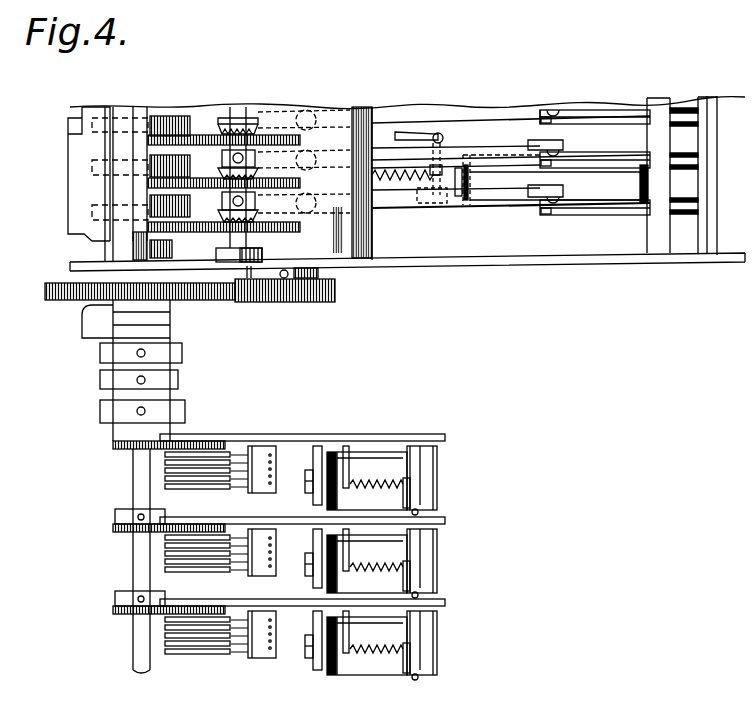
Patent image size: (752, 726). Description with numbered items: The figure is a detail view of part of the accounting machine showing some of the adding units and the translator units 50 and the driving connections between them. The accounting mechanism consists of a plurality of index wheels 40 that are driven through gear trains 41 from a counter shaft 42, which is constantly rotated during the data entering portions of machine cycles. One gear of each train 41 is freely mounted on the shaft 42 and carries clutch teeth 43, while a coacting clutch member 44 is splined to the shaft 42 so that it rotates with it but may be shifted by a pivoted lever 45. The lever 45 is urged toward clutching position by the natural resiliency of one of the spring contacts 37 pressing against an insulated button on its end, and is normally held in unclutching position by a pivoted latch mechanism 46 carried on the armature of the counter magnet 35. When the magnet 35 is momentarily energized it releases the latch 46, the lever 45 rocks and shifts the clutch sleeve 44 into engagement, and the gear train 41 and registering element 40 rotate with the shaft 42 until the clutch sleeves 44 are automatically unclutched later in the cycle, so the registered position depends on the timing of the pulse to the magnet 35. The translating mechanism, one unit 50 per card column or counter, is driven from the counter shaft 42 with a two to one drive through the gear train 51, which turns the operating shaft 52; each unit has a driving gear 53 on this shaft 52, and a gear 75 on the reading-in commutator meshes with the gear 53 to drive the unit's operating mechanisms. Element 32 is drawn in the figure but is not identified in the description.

The spring-loaded frame unit 32 is at (387, 563).
The counter magnet 35 is at (492, 175).
The spring contact 37 is at (563, 118).
The index wheel 40 is at (166, 212).
The gear train 41 is at (201, 172).
The counter shaft 42 is at (253, 122).
The clutch teeth 43 is at (258, 216).
The clutch member 44 is at (222, 202).
The pivoted lever 45 is at (383, 207).
The latch mechanism 46 is at (445, 134).
The translator unit 50 is at (276, 552).
The gear train 51 is at (258, 303).
The operating shaft 52 is at (135, 561).
The driving gear 53 is at (118, 451).
The gear 75 is at (219, 436).